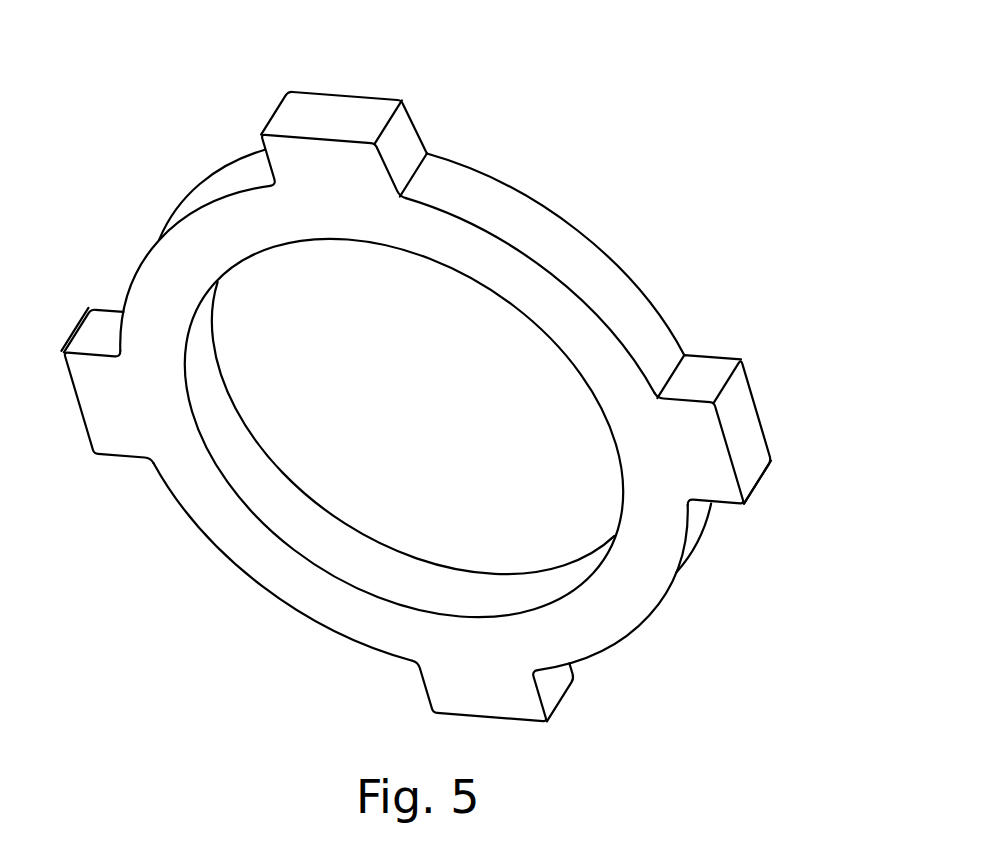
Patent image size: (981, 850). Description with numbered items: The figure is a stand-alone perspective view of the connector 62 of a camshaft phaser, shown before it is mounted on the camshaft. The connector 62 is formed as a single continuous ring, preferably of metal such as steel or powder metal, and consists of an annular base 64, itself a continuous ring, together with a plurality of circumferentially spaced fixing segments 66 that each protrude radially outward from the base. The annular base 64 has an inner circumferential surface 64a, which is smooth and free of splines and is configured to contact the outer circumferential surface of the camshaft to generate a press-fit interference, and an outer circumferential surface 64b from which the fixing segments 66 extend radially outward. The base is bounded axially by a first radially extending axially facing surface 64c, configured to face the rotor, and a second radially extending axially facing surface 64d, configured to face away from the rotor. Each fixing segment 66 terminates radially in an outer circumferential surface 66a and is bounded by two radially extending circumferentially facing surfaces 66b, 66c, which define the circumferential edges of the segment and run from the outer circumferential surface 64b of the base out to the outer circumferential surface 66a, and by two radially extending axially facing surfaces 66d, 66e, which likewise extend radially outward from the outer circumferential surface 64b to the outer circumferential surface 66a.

The connector 62 is at (661, 288).
The annular base 64 is at (479, 297).
The inner circumferential surface 64a is at (350, 563).
The outer circumferential surface 64b is at (531, 222).
The first radially extending axially facing surface 64c is at (562, 322).
The second radially extending axially facing surface 64d is at (611, 240).
The fixing segments 66 is at (351, 89).
The outer circumferential surface 66a is at (749, 449).
The radially extending circumferentially facing surface 66b is at (698, 377).
The radially extending circumferentially facing surface 66c is at (402, 145).
The radially extending axially facing surface 66d is at (713, 485).
The radially extending axially facing surface 66e is at (766, 416).